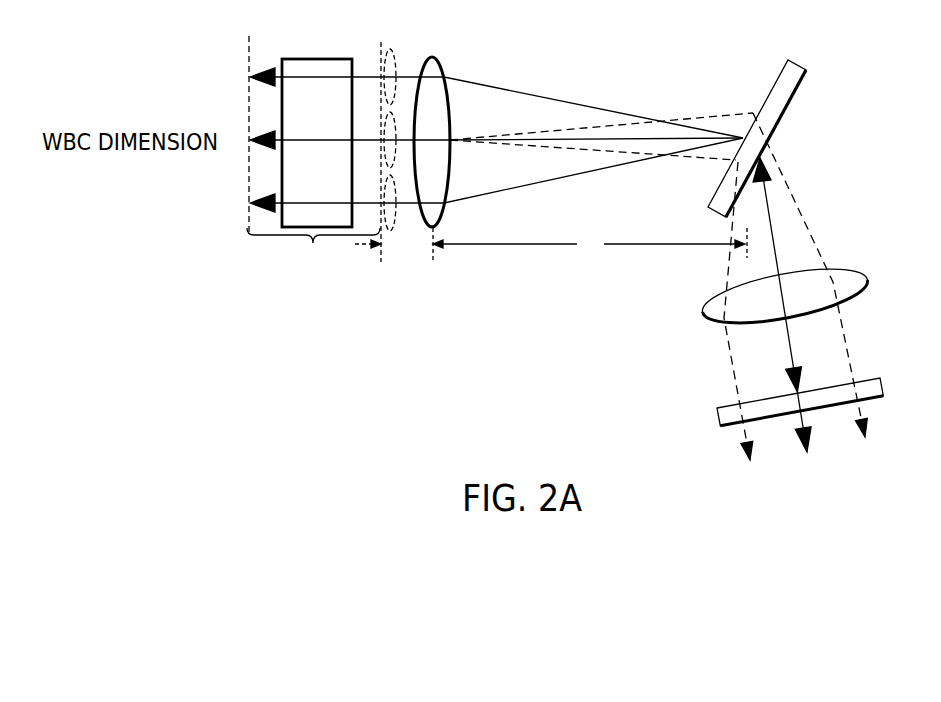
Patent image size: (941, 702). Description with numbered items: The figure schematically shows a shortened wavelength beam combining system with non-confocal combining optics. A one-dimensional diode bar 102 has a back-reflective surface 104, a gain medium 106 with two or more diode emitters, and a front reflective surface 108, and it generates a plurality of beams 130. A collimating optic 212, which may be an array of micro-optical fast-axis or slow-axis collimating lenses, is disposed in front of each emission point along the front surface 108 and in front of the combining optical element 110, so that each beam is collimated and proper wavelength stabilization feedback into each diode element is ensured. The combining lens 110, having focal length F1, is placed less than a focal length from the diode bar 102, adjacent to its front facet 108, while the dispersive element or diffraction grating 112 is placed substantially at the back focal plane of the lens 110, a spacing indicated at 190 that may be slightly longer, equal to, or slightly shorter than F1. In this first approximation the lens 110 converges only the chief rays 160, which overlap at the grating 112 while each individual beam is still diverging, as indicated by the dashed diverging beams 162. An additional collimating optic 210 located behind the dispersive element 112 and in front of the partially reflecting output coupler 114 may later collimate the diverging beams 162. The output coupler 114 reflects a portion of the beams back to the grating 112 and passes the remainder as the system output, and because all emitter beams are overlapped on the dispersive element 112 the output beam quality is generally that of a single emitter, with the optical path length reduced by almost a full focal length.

The 1D bar of diode lasers 102 is at (313, 247).
The back-reflective surface 104 is at (255, 124).
The gain medium 106 is at (316, 58).
The front reflective surface 108 is at (381, 58).
The combining optical element 110 is at (437, 60).
The dispersive element 112 is at (803, 65).
The partially reflecting output coupler 114 is at (884, 387).
The plurality of beams 130 is at (314, 80).
The chief rays 160 is at (698, 137).
The diverging beams 162 is at (806, 184).
The focal distance F1 indicator 190 is at (583, 258).
The additional collimating optic 210 is at (870, 283).
The collimating optic 212 is at (398, 60).